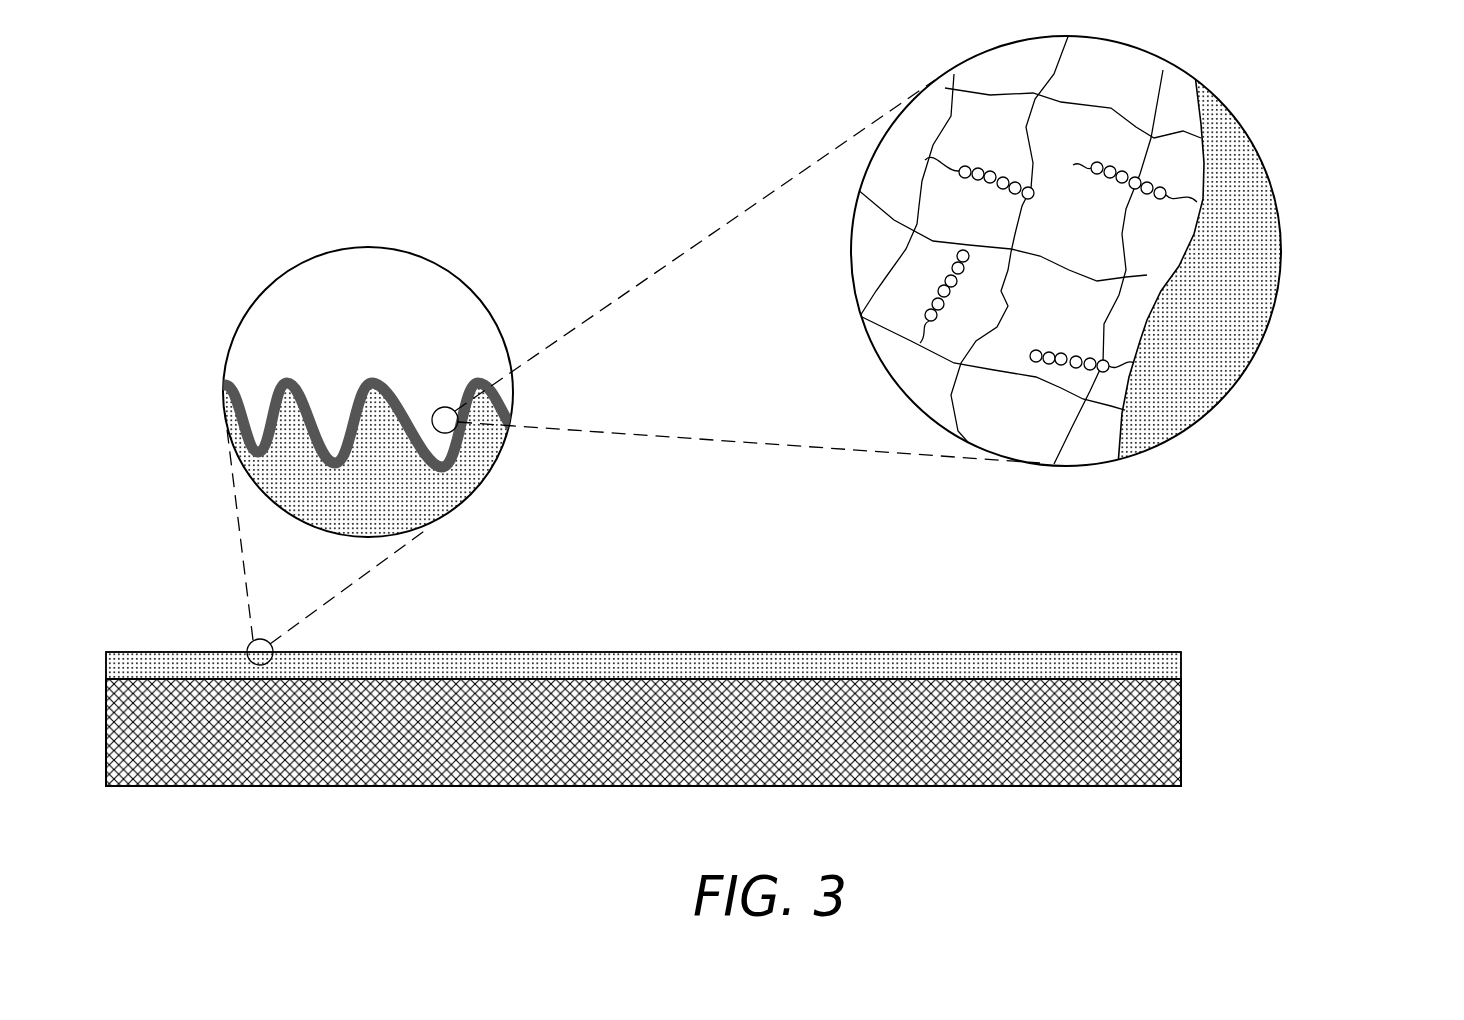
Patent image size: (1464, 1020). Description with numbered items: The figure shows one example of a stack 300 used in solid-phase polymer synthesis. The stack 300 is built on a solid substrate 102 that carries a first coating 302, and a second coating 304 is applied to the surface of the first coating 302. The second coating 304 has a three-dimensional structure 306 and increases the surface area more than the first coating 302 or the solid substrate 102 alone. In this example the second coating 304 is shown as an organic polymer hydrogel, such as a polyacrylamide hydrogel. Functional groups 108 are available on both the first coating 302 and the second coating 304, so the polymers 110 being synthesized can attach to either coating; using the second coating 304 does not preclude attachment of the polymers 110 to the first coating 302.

The stack 300 is at (165, 62).
The solid substrate 102 is at (727, 732).
The first coating 302 is at (1212, 415).
The second coating 304 is at (944, 389).
The three-dimensional structure 306 is at (490, 500).
The polymer 110 is at (994, 164).
The functional group 108 is at (1191, 194).